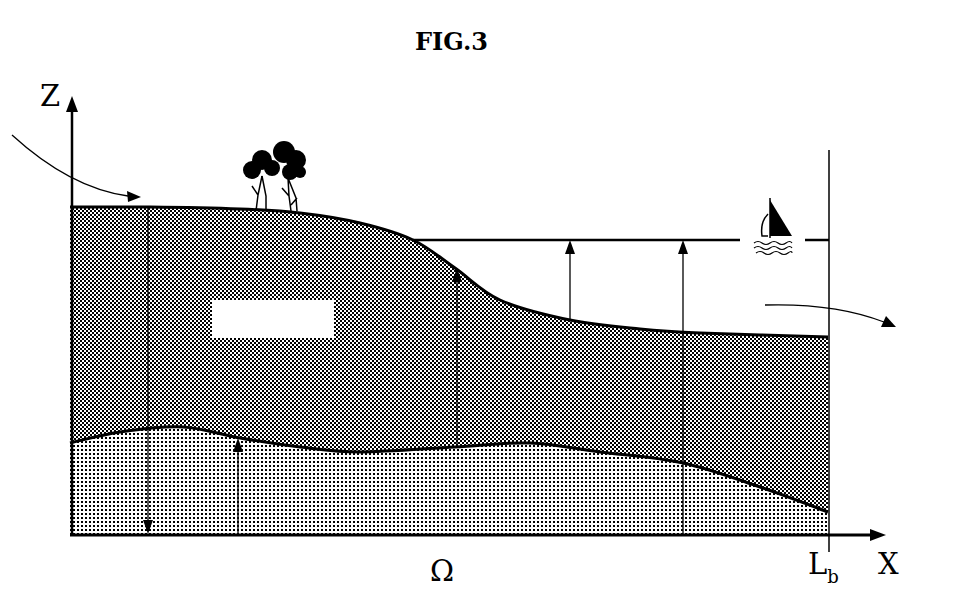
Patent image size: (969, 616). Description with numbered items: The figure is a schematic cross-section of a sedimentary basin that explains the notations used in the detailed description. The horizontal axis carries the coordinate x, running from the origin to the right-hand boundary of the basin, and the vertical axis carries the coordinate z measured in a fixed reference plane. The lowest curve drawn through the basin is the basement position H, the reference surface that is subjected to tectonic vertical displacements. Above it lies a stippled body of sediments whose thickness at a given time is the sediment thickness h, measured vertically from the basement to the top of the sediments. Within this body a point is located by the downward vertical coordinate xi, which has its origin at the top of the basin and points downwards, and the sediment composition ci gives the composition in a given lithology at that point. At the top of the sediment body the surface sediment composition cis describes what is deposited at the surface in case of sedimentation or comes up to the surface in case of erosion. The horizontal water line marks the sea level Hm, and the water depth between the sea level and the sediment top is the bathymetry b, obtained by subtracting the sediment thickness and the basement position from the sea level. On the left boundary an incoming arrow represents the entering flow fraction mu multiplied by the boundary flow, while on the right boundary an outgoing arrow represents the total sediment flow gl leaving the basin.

The surface sediment composition c_i^s(x,t) cis is at (403, 233).
The basement position H(x,t) H is at (449, 480).
The downward vertical coordinate ξ xi is at (164, 370).
The sediment thickness h(x,t) h is at (504, 357).
The bathymetry b(x,t) b is at (610, 280).
The sea level H_m(t) Hm is at (731, 387).
The sediment composition c_i(x,ξ,t) ci is at (273, 320).
The entering flow fraction μ_i,e^l mu is at (122, 168).
The total sediment flow g_l gl is at (841, 298).